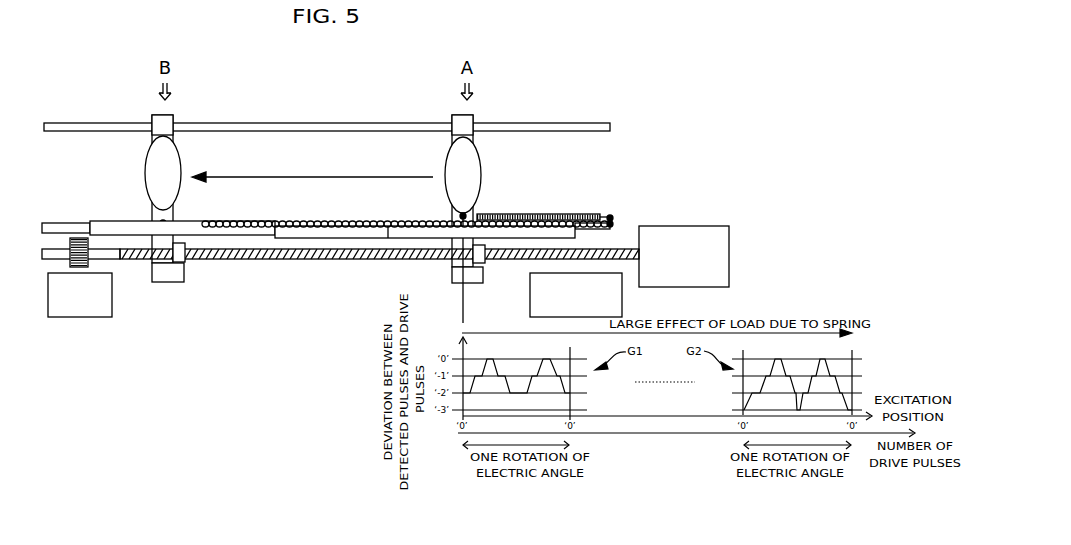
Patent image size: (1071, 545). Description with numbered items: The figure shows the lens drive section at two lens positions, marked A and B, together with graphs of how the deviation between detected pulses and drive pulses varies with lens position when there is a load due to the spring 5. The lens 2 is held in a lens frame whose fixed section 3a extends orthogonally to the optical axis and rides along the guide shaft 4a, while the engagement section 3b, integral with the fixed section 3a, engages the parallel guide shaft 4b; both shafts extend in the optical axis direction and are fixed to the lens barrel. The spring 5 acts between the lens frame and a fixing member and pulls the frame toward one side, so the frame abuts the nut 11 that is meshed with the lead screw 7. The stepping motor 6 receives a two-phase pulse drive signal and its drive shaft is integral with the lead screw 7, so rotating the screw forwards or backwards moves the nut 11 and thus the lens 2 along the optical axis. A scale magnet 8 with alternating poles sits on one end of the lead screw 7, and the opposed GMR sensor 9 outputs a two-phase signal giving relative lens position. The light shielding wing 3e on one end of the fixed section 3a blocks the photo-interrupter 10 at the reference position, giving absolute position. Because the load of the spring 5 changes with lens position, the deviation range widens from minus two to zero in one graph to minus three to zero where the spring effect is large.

The lens 2 is at (181, 162).
The fixed section 3a is at (152, 137).
The engagement section 3b is at (118, 221).
The light shielding wing 3e is at (184, 282).
The guide shaft 4a is at (545, 132).
The guide shaft 4b is at (610, 228).
The spring 5 is at (350, 220).
The stepping motor 6 is at (697, 226).
The lead screw 7 is at (310, 259).
The scale magnet 8 is at (88, 262).
The GMR sensor 9 is at (112, 309).
The photo-interrupter 10 is at (622, 313).
The nut 11 is at (185, 260).